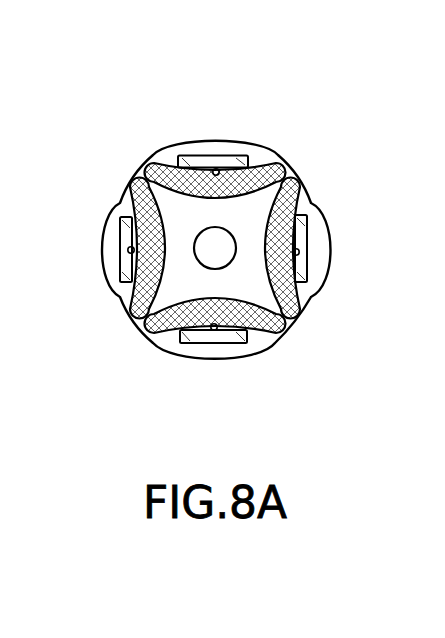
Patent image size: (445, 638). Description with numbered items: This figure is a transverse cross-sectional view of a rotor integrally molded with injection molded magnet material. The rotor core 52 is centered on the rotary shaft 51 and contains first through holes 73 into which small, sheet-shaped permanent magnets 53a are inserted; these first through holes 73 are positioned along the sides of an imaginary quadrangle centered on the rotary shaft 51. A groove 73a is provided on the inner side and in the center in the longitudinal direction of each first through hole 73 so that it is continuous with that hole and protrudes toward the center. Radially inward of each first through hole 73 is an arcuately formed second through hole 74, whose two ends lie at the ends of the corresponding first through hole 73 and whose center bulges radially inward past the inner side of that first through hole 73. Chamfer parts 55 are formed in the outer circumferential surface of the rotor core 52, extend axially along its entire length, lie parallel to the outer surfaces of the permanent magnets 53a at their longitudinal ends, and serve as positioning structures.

The rotary shaft 51 is at (222, 246).
The rotor core 52 is at (215, 150).
The permanent magnet 53a is at (193, 161).
The chamfer part 55 is at (163, 156).
The first through hole 73 is at (228, 166).
The groove 73a is at (237, 162).
The second through hole 74 is at (302, 188).